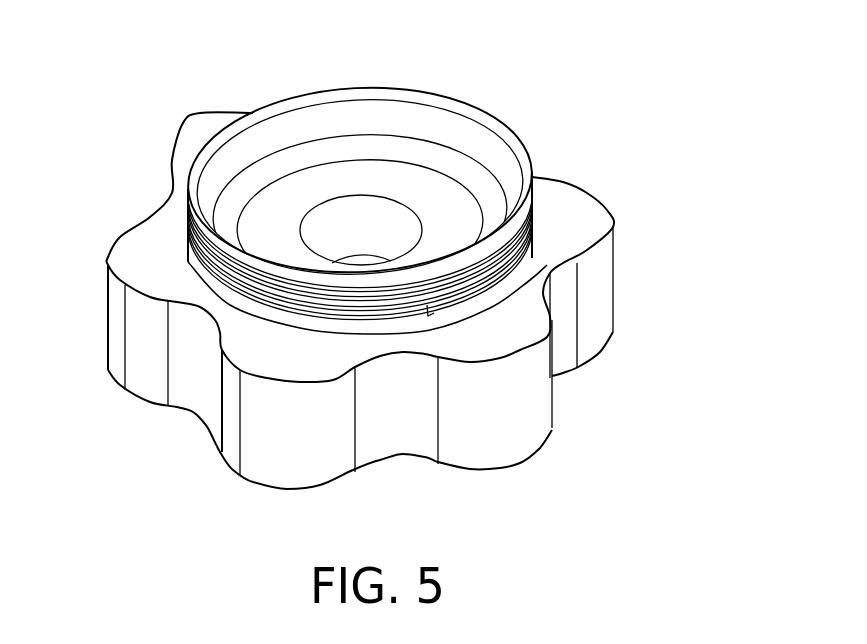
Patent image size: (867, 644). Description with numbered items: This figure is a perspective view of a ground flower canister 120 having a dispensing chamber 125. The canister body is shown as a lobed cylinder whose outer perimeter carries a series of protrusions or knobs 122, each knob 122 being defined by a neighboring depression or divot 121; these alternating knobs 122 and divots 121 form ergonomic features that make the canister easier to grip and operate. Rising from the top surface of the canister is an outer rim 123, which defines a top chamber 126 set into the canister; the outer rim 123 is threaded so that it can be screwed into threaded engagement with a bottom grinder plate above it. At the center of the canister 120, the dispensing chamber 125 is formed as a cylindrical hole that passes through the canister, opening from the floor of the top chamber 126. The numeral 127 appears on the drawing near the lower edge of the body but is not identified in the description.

The ground flower canister 120 is at (606, 206).
The depression 121 is at (190, 382).
The protrusion 122 is at (276, 441).
The outer rim 123 is at (498, 127).
The dispensing chamber 125 is at (360, 262).
The top chamber 126 is at (305, 200).
The bottom surface 127 is at (408, 460).